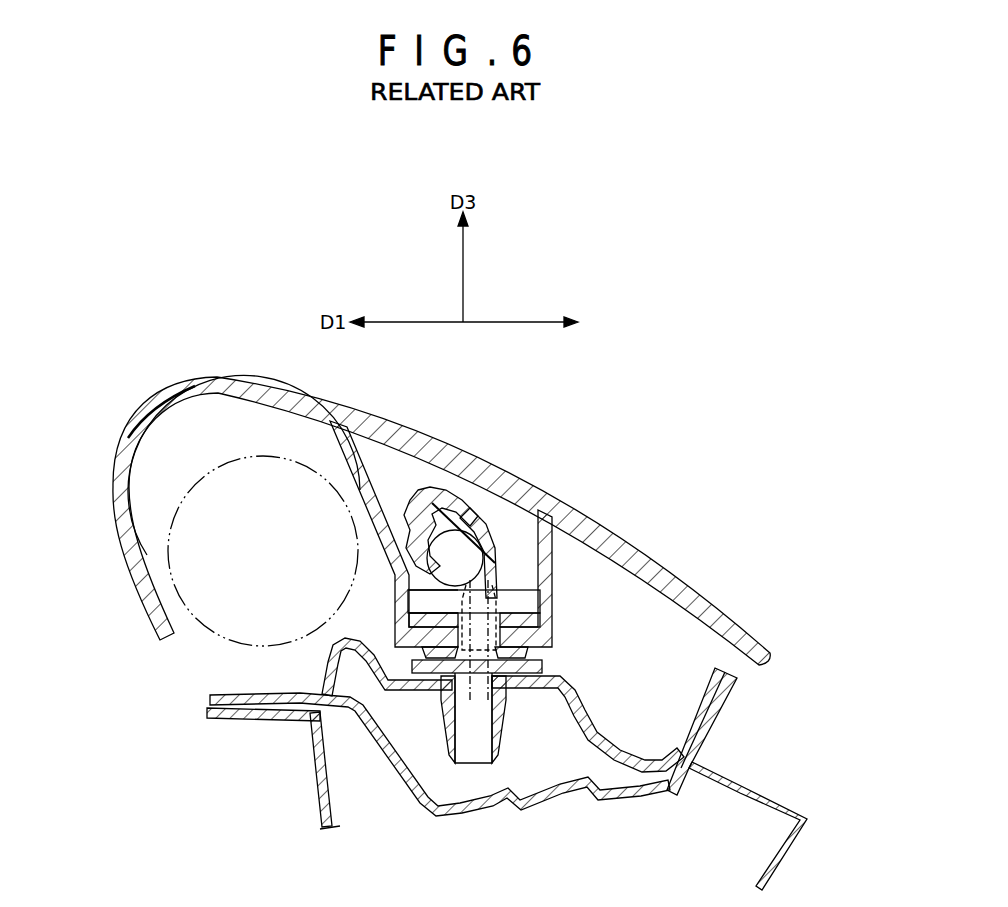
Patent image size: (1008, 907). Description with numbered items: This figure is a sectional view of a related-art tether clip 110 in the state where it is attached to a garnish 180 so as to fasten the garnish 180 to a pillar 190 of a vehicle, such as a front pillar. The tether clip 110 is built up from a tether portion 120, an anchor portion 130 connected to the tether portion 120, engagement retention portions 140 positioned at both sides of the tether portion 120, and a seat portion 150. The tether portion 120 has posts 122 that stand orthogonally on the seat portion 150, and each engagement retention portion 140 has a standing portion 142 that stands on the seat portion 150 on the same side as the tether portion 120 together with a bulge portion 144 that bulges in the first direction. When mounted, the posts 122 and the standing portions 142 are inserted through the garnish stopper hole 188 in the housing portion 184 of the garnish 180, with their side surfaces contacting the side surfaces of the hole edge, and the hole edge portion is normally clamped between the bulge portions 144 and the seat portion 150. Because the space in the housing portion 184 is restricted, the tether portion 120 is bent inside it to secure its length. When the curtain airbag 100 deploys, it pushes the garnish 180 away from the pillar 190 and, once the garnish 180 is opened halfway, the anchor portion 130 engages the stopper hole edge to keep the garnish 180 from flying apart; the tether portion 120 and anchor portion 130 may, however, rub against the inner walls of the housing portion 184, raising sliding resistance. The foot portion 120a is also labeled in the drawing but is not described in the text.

The curtain airbag 100 is at (213, 613).
The tether clip 110 is at (470, 500).
The tether portion 120 is at (482, 580).
The clip foot 120a is at (432, 650).
The posts 122 is at (464, 600).
The anchor portion 130 is at (436, 508).
The engagement retention portions 140 is at (505, 600).
The standing portion 142 is at (442, 697).
The bulge portion 144 is at (450, 608).
The seat portion 150 is at (520, 650).
The garnish 180 is at (352, 422).
The housing portion 184 is at (552, 568).
The garnish stopper hole 188 is at (440, 632).
The pillar 190 is at (327, 667).